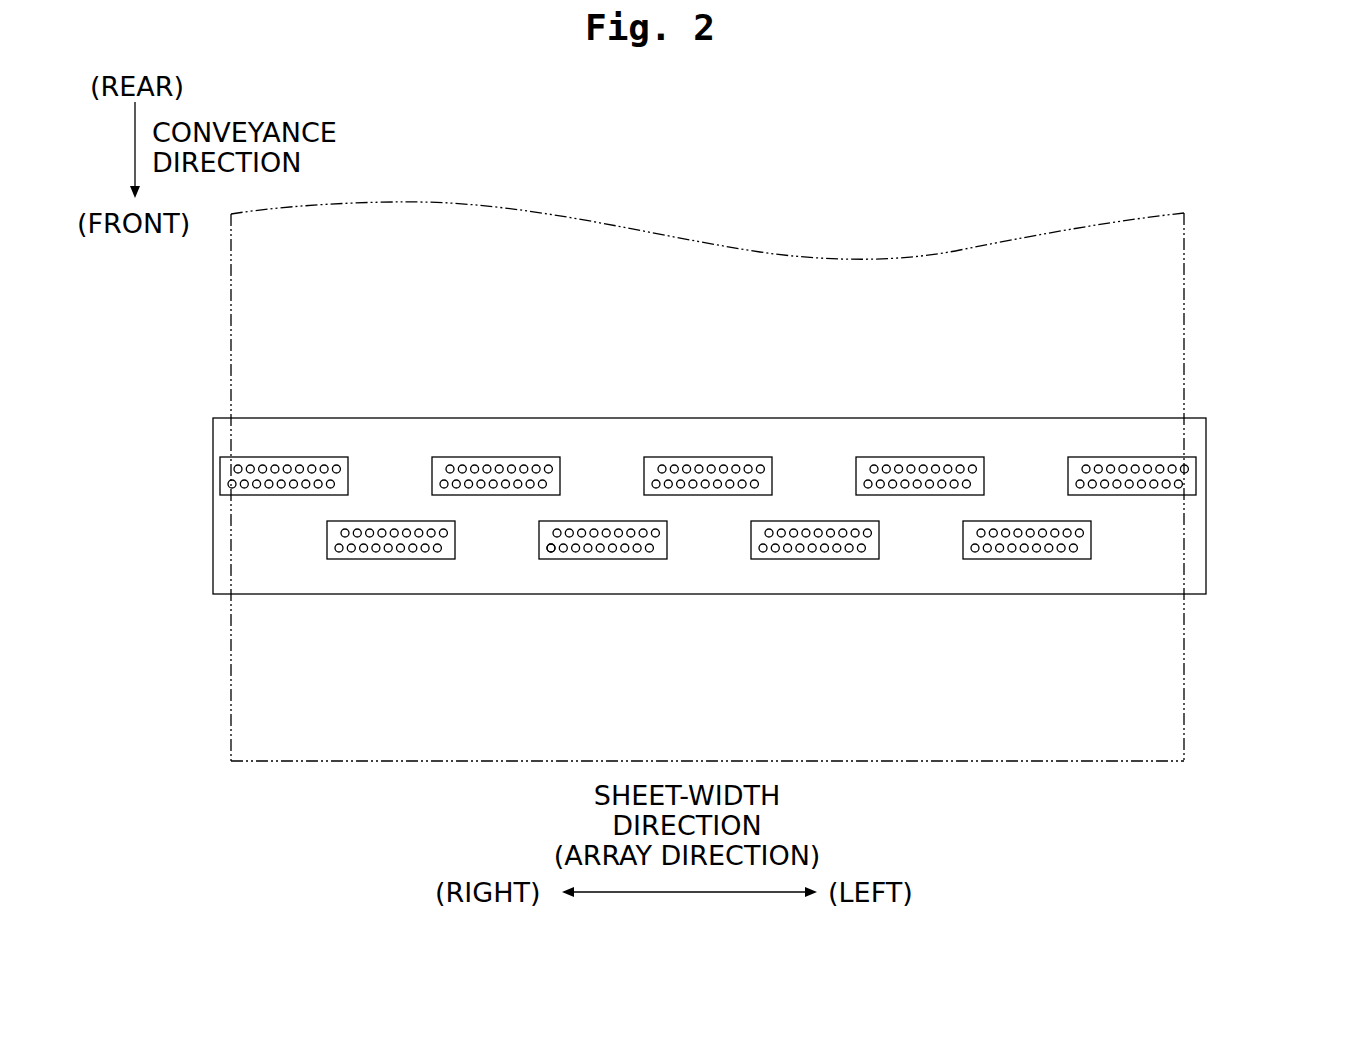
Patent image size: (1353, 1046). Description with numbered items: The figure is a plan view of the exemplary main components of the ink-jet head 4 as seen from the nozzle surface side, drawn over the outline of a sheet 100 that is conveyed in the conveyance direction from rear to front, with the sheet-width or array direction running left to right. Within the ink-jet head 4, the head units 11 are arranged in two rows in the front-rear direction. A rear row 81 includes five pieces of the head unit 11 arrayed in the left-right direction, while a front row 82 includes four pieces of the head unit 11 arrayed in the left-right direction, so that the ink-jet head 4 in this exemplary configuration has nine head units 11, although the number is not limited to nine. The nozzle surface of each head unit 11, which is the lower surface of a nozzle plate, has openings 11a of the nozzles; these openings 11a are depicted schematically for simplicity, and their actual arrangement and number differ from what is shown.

The sheet 100 is at (1184, 262).
The ink-jet head 4 is at (1195, 410).
The head unit 11 is at (746, 510).
The opening 11a is at (548, 551).
The rear row 81 is at (1212, 455).
The front row 82 is at (1212, 515).